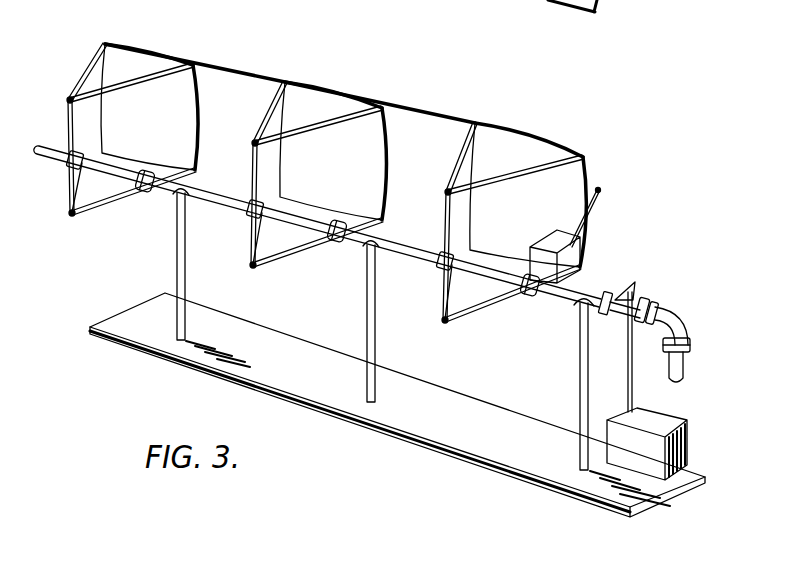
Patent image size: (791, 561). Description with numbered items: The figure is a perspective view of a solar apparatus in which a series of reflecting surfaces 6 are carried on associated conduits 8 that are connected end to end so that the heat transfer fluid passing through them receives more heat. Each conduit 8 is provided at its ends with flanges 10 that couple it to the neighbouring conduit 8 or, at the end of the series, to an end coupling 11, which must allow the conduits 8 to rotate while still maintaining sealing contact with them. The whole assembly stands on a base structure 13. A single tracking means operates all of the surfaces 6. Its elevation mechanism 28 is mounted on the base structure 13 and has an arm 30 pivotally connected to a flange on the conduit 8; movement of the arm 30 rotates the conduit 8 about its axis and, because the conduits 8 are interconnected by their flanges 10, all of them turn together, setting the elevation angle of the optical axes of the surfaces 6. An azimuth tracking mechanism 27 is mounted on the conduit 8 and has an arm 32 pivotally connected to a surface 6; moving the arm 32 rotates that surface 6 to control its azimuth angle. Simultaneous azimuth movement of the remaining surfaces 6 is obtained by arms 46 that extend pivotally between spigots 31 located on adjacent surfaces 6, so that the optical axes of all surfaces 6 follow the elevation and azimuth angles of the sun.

The reflecting surface 6 is at (183, 102).
The conduit 8 is at (407, 248).
The flange 10 is at (150, 185).
The end coupling 11 is at (655, 305).
The base structure 13 is at (446, 423).
The azimuth tracking mechanism 27 is at (572, 255).
The elevation mechanism 28 is at (650, 430).
The arm 30 is at (582, 387).
The spigot 31 is at (105, 43).
The arm 32 is at (590, 207).
The arm 46 is at (257, 74).